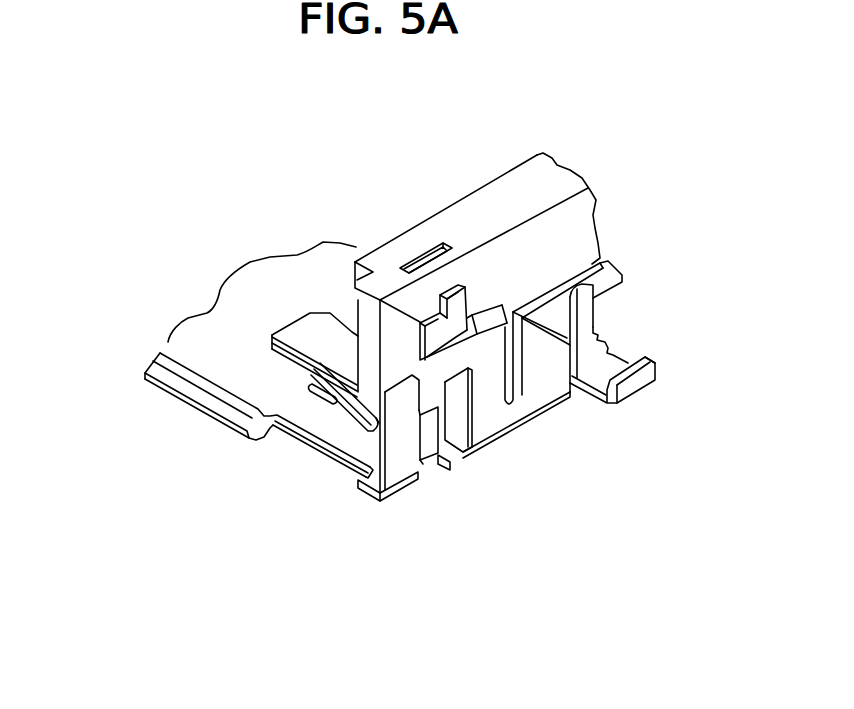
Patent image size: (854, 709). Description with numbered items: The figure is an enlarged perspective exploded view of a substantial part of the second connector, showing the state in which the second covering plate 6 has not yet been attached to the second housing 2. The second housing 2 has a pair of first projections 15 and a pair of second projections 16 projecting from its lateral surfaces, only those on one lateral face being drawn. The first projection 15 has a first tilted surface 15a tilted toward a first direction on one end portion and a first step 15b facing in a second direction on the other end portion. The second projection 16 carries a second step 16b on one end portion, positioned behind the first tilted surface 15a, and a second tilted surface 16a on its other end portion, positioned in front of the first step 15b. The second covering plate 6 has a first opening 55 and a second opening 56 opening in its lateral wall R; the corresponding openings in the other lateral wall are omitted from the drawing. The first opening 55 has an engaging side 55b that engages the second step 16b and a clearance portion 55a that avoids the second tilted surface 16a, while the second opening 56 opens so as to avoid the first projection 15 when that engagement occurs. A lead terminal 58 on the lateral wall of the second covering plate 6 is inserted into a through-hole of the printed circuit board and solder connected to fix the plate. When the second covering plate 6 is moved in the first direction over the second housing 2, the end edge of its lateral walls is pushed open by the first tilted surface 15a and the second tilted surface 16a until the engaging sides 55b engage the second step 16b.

The second housing 2 is at (526, 158).
The second covering plate 6 is at (175, 391).
The first projection 15 is at (466, 326).
The first tilted surface 15a is at (456, 286).
The first step 15b is at (474, 322).
The second projection 16 is at (420, 330).
The second tilted surface 16a is at (412, 387).
The second step 16b is at (350, 333).
The first opening 55 is at (431, 433).
The clearance portion 55a is at (440, 458).
The engaging side 55b is at (417, 482).
The second opening 56 is at (452, 413).
The lead terminal 58 is at (585, 308).
The lateral wall R is at (392, 500).